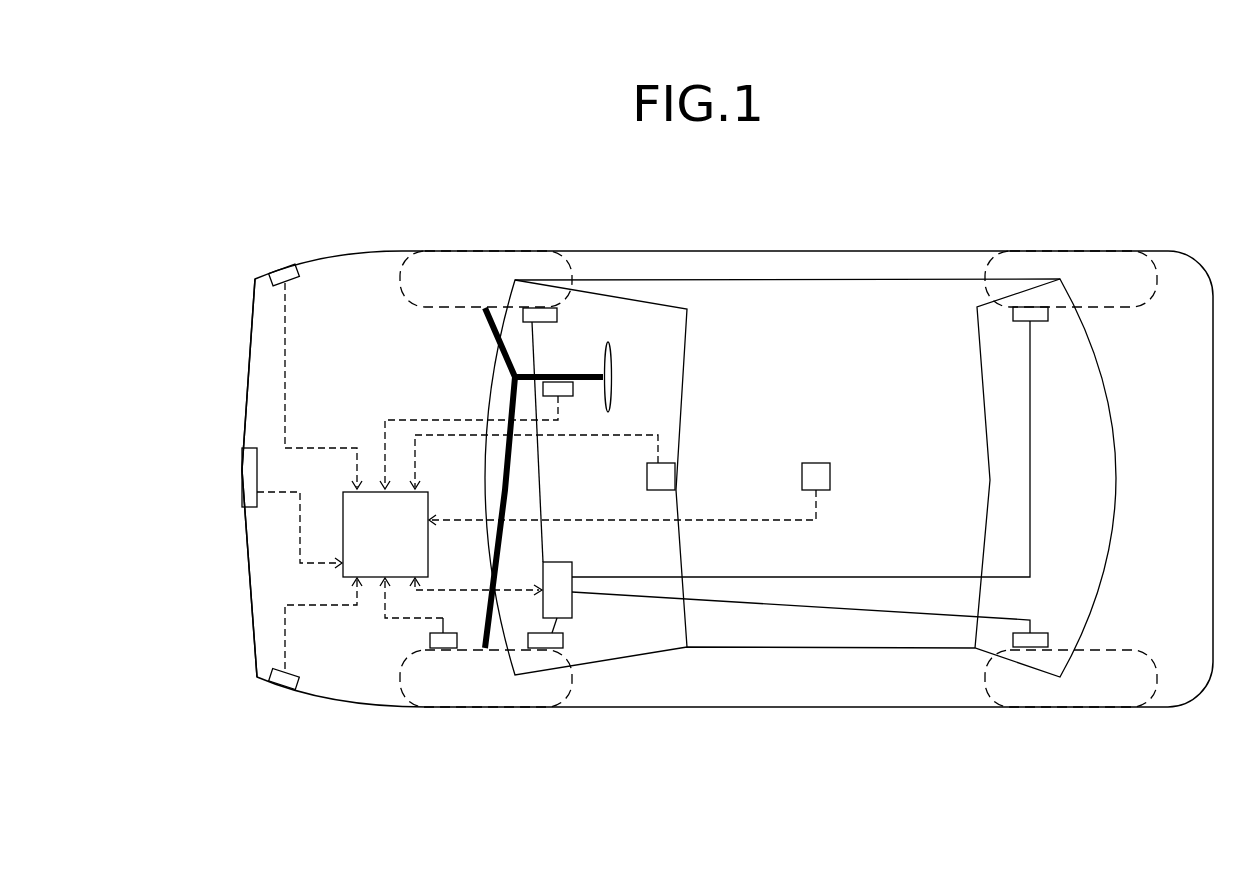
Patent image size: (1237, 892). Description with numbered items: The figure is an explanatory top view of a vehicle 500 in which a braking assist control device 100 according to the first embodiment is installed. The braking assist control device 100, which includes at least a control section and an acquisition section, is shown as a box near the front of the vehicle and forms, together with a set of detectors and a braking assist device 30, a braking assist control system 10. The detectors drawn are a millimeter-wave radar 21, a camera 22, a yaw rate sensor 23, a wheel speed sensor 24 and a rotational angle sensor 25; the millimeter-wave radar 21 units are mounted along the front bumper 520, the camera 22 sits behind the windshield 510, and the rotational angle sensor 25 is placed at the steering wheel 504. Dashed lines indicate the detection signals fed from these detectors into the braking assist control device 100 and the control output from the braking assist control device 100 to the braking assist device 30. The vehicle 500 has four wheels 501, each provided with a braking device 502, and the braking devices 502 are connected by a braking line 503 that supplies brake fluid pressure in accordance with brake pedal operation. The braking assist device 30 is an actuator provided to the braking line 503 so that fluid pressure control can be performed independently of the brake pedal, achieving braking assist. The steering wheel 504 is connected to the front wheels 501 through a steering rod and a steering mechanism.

The braking assist control system 10 is at (238, 681).
The millimeter-wave radar 21 is at (280, 267).
The camera 22 is at (542, 462).
The yaw rate sensor 23 is at (629, 494).
The wheel speed sensor 24 is at (430, 638).
The rotational angle sensor 25 is at (570, 396).
The braking assist device 30 is at (557, 590).
The braking assist control device 100 is at (442, 543).
The vehicle 500 is at (800, 242).
The wheels 501 is at (487, 268).
The braking devices 502 is at (550, 317).
The braking line 503 is at (558, 562).
The steering wheel 504 is at (611, 343).
The windshield 510 is at (658, 407).
The front bumper 520 is at (248, 350).